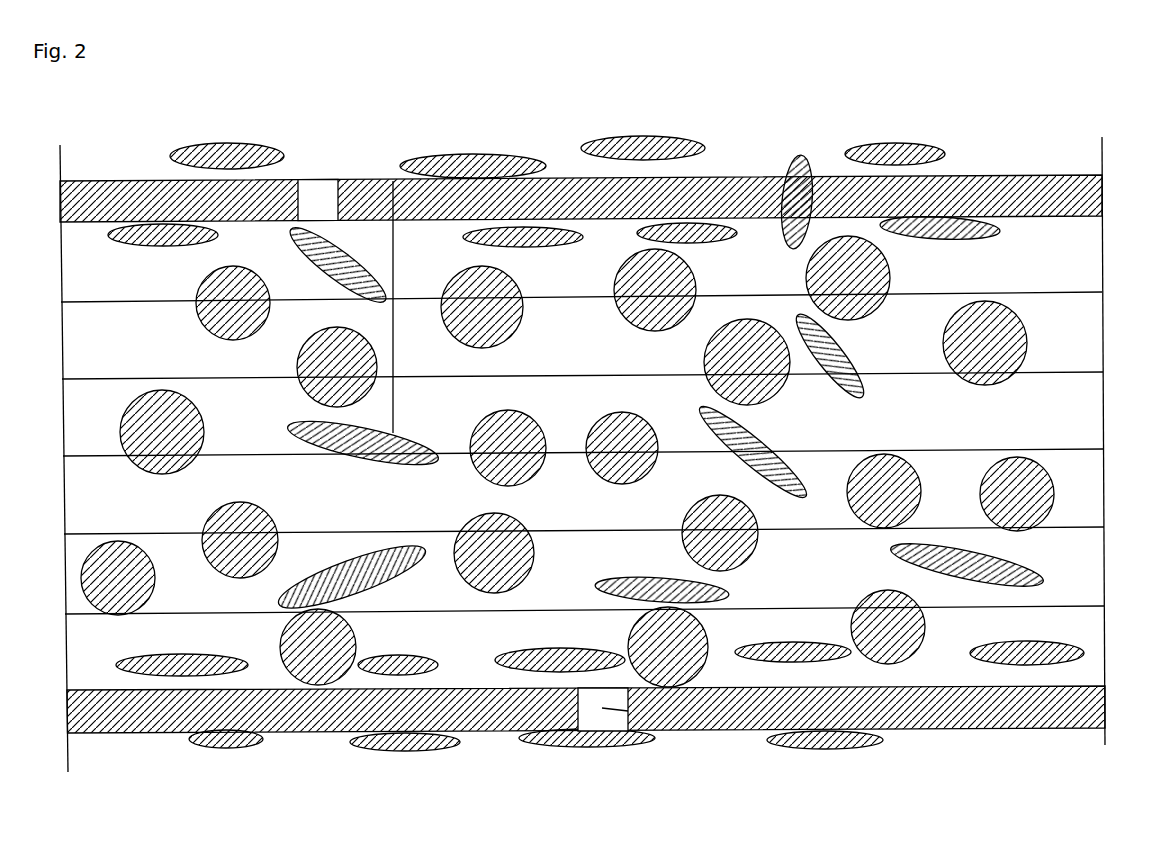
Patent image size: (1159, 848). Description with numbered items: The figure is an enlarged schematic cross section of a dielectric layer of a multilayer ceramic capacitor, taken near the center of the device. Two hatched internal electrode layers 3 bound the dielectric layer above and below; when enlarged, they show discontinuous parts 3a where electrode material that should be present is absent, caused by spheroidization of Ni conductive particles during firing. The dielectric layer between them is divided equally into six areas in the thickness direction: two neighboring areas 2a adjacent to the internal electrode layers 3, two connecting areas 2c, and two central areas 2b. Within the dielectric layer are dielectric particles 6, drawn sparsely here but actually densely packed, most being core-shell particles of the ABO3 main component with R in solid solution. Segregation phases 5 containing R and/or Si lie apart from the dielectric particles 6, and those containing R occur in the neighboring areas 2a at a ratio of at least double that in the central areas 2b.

The neighboring areas 2a is at (943, 258).
The central areas 2b is at (943, 458).
The connecting areas 2c is at (944, 313).
The internal electrode layers 3 is at (728, 176).
The discontinuous parts 3a is at (683, 730).
The segregation phases 5 is at (393, 181).
The dielectric particles 6 is at (225, 575).